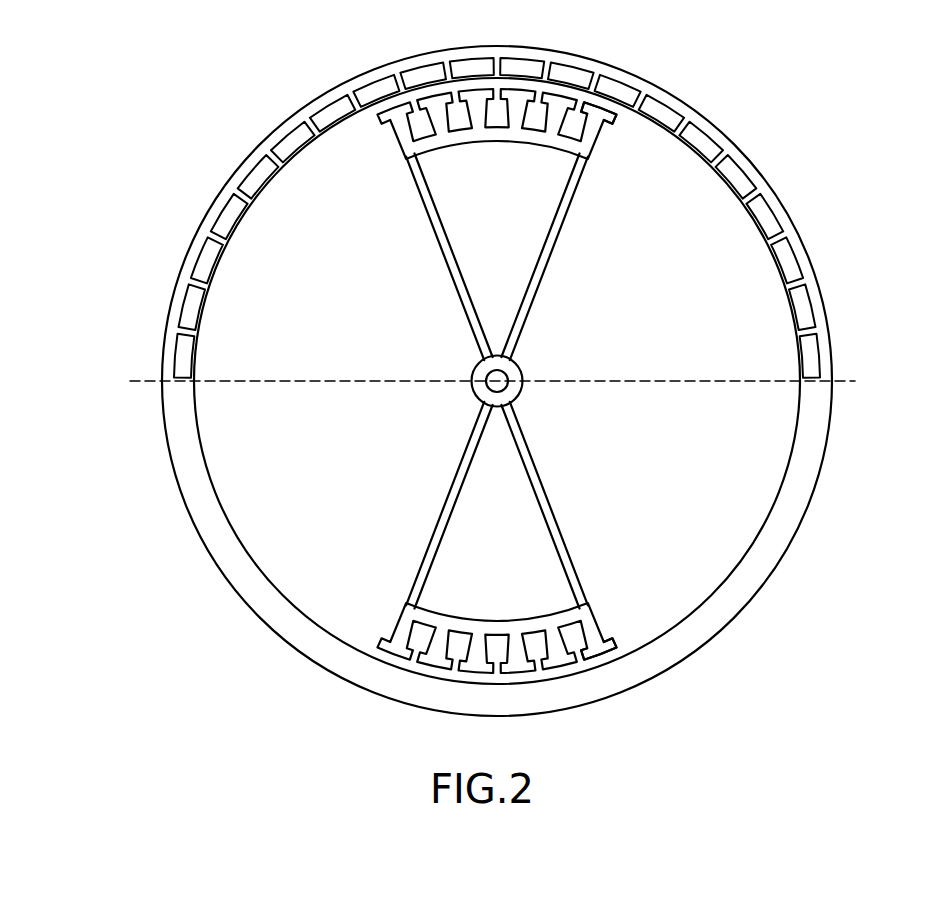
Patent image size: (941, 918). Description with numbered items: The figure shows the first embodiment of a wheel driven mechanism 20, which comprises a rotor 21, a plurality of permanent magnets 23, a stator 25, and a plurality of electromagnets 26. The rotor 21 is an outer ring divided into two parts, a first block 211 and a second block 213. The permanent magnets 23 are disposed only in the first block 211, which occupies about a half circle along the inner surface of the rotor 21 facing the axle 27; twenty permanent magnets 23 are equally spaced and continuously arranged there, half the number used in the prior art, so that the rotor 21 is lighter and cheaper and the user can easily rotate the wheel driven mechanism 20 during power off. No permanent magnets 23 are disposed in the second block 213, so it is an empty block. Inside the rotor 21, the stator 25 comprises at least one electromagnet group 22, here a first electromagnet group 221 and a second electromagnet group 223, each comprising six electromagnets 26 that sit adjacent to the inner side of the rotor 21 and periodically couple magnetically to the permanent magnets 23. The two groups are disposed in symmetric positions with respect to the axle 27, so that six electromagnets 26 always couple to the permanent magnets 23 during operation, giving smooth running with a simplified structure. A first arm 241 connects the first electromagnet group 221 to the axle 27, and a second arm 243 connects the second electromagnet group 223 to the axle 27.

The wheel driven mechanism 20 is at (224, 127).
The rotor 21 is at (906, 325).
The first block 211 is at (839, 353).
The second block 213 is at (839, 407).
The permanent magnets 23 is at (791, 261).
The electromagnet group 22 is at (622, 465).
The first electromagnet group 221 is at (499, 164).
The second electromagnet group 223 is at (499, 598).
The stator 25 is at (613, 181).
The electromagnets 26 is at (604, 126).
The first arm 241 is at (451, 263).
The second arm 243 is at (451, 491).
The axle 27 is at (502, 376).